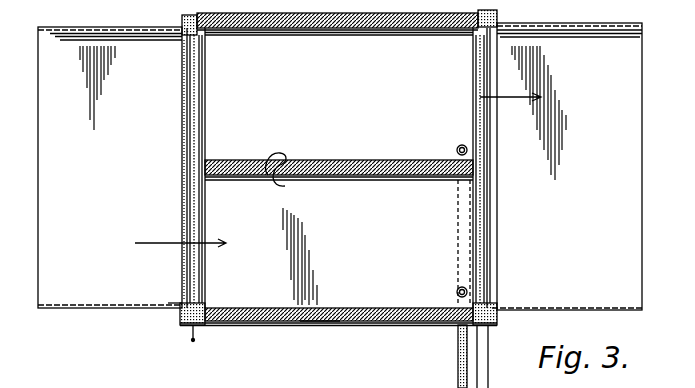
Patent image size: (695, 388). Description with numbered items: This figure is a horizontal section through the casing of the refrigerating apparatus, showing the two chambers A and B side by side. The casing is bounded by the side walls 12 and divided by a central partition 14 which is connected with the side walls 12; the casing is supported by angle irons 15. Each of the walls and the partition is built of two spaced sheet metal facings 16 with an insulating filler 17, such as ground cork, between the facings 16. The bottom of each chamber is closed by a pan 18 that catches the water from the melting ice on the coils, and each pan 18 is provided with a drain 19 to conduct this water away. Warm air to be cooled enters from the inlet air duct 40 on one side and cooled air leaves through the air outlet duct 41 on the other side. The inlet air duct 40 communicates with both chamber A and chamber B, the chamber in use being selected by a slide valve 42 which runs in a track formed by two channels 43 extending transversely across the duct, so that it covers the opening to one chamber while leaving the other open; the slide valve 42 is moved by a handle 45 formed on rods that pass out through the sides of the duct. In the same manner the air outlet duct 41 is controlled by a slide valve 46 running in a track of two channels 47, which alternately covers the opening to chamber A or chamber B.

The side walls 12 is at (320, 27).
The central partition 14 is at (343, 160).
The angle irons 15 is at (178, 309).
The sheet metal facings 16 is at (280, 177).
The insulating filler 17 is at (322, 324).
The pan 18 is at (344, 173).
The drain 19 is at (457, 148).
The inlet air duct 40 is at (132, 167).
The air outlet duct 41 is at (561, 166).
The slide valve 42 is at (196, 101).
The channels 43 is at (190, 32).
The handle 45 is at (193, 343).
The slide valve 46 is at (482, 245).
The channels 47 is at (478, 120).